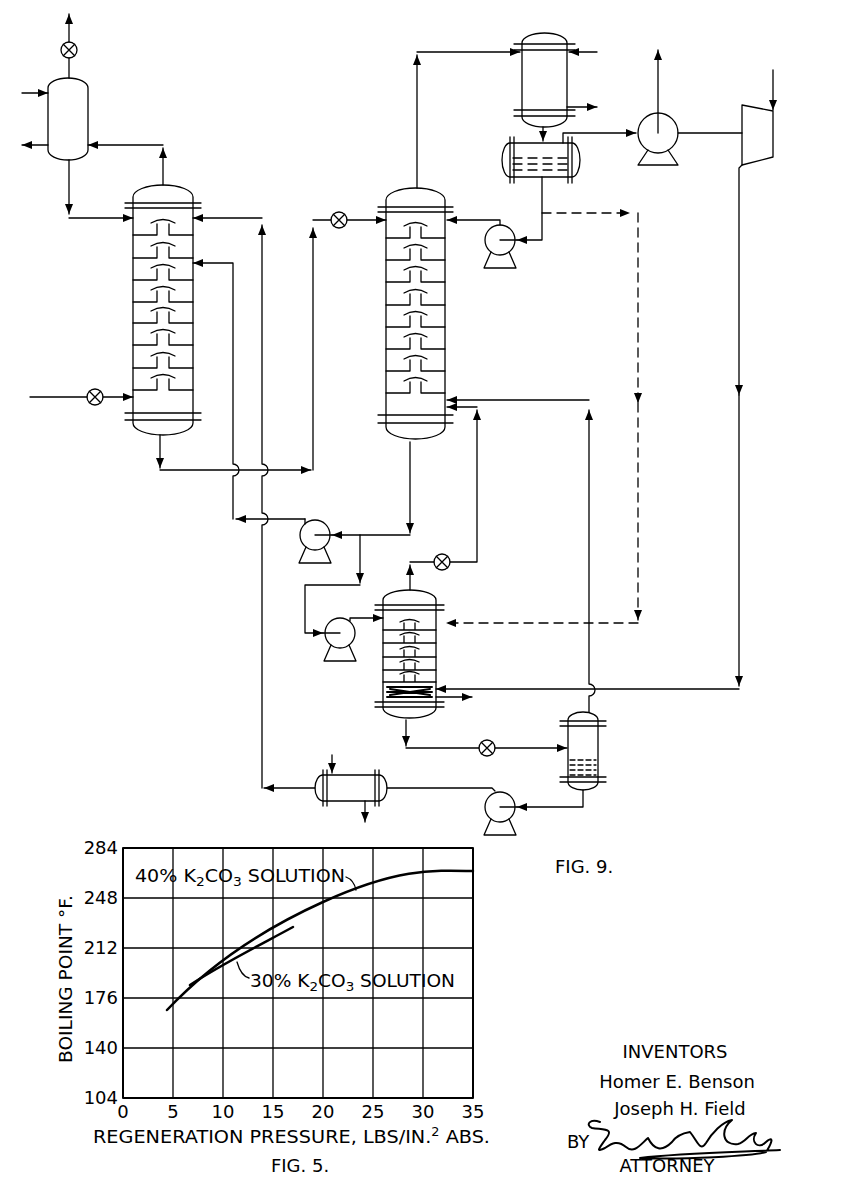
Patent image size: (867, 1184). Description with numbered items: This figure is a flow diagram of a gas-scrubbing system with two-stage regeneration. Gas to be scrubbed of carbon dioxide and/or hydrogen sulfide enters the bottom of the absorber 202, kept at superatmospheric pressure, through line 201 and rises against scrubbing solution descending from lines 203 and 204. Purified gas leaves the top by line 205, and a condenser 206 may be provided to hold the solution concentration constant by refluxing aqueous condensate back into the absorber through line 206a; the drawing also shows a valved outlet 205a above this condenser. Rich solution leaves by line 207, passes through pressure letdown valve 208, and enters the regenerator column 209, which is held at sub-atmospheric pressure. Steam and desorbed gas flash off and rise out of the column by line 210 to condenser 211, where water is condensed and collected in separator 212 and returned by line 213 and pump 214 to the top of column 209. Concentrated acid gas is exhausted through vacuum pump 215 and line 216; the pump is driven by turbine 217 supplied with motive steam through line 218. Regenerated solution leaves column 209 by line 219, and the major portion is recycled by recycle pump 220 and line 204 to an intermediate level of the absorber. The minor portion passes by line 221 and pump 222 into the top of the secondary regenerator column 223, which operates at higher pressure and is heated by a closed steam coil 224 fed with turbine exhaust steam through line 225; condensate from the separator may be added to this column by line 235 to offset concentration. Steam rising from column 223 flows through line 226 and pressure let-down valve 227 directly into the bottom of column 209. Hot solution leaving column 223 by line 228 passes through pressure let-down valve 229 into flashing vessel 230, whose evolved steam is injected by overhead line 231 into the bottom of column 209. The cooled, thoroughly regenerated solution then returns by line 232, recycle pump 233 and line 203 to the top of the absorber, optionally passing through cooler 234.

The line 201 is at (44, 398).
The absorber 202 is at (133, 309).
The line 203 is at (313, 312).
The line 204 is at (233, 430).
The line 205 is at (149, 143).
The purified gas outlet valve line 205a is at (70, 34).
The condenser 206 is at (88, 97).
The line 206a is at (69, 177).
The line 207 is at (168, 472).
The pressure letdown valve 208 is at (339, 212).
The regenerator column 209 is at (445, 318).
The line 210 is at (444, 52).
The condenser 211 is at (567, 72).
The separator 212 is at (582, 172).
The line 213 is at (542, 208).
The pump 214 is at (503, 268).
The vacuum pump 215 is at (678, 125).
The line 216 is at (658, 90).
The turbine 217 is at (754, 97).
The line 218 is at (773, 83).
The line 219 is at (410, 492).
The recycle pump 220 is at (325, 526).
The line 221 is at (307, 597).
The pump 222 is at (327, 648).
The secondary regenerator column 223 is at (436, 652).
The closed steam coil 224 is at (383, 689).
The line 225 is at (739, 502).
The line 226 is at (477, 531).
The pressure let-down valve 227 is at (448, 569).
The line 228 is at (407, 733).
The pressure let-down valve 229 is at (492, 741).
The flashing vessel 230 is at (598, 740).
The overhead line 231 is at (589, 661).
The line 232 is at (555, 809).
The recycle pump 233 is at (497, 792).
The cooler 234 is at (349, 803).
The line 235 is at (638, 447).